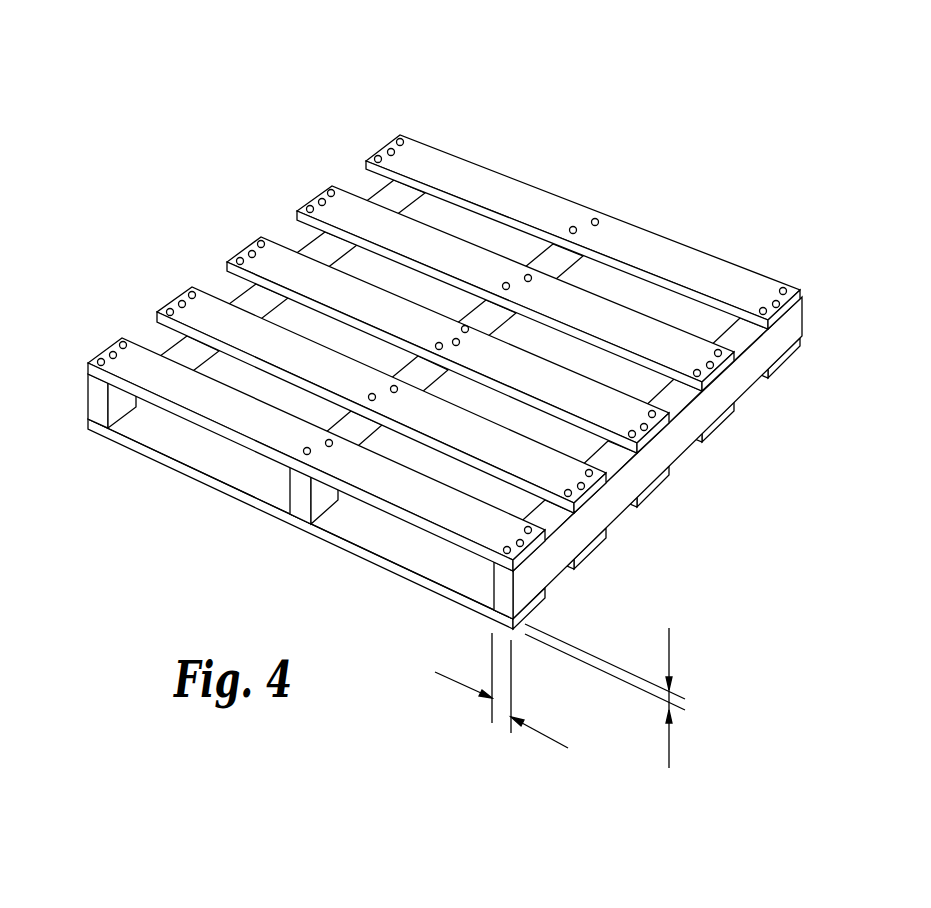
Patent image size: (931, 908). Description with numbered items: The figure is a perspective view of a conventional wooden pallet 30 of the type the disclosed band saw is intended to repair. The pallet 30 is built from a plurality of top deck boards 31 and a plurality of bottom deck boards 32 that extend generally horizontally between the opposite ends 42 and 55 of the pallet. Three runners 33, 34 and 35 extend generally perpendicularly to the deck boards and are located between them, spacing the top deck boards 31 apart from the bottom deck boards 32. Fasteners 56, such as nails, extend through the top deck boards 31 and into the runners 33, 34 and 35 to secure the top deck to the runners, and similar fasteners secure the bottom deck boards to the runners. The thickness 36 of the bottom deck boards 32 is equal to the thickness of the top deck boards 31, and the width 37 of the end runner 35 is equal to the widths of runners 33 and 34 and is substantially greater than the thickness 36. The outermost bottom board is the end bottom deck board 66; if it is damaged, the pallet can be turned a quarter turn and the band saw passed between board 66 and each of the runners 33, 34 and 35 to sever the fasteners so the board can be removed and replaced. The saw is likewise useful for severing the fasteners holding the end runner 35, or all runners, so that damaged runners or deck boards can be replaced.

The wooden pallet 30 is at (417, 390).
The top deck boards 31 is at (104, 352).
The bottom deck boards 32 is at (97, 422).
The runner 33 is at (93, 390).
The runner 34 is at (297, 493).
The end runner 35 is at (498, 585).
The thickness 36 is at (605, 683).
The width 37 is at (513, 701).
The end 42 is at (708, 403).
The end 55 is at (290, 228).
The fasteners 56 is at (122, 343).
The end bottom deck board 66 is at (215, 477).